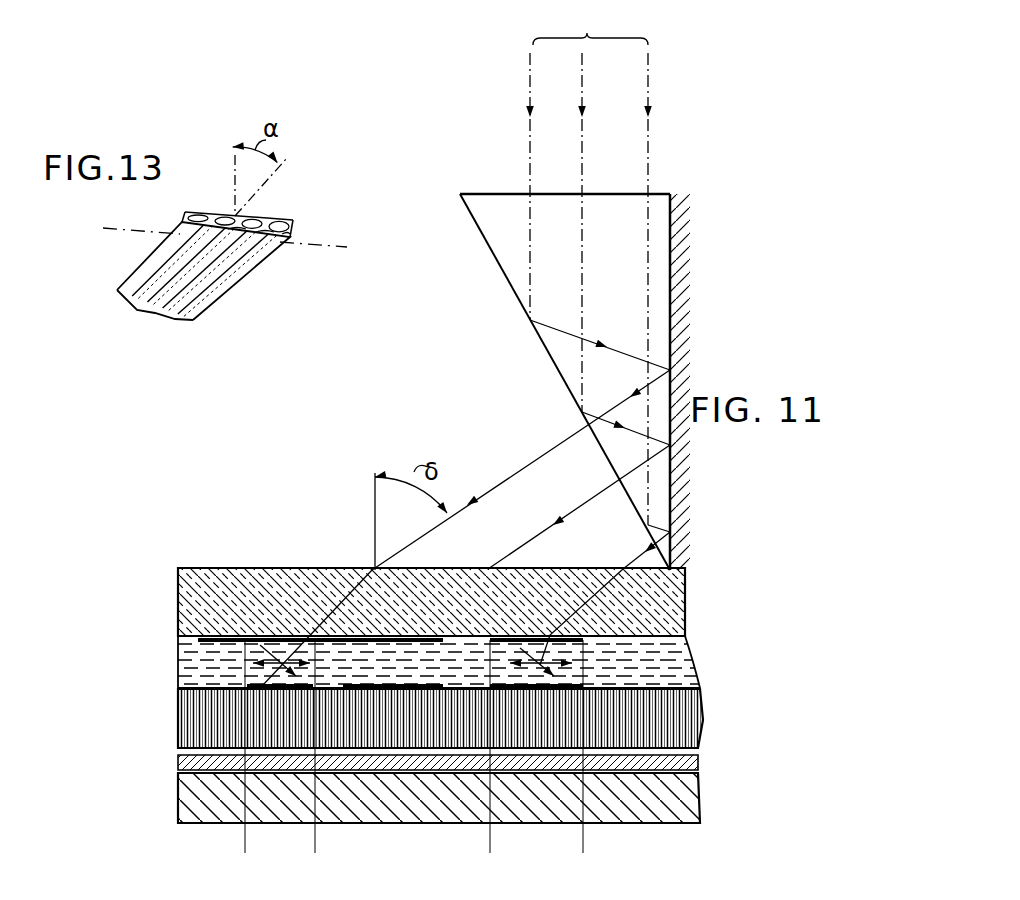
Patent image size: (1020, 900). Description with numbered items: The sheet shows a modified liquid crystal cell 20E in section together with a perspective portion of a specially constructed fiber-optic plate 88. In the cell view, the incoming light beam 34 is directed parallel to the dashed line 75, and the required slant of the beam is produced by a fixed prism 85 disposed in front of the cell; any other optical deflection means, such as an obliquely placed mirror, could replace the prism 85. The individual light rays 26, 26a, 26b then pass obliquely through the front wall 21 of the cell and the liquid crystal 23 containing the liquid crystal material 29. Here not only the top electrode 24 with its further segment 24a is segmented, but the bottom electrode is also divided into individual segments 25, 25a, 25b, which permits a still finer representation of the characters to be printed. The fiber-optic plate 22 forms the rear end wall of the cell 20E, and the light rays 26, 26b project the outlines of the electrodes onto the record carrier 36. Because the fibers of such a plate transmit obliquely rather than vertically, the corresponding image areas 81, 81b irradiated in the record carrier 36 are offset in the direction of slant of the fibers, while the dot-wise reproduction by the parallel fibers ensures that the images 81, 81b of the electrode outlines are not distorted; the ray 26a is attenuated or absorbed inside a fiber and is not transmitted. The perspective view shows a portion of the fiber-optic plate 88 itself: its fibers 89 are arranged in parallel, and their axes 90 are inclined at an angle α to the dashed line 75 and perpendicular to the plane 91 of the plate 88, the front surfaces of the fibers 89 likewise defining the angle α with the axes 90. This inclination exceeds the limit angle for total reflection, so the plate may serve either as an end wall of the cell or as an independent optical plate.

In FIG. 11, the light beam 34 is at (590, 25).
In FIG. 11, the light ray 26 is at (530, 160).
In FIG. 11, the light ray 26a is at (582, 160).
In FIG. 11, the light ray 26b is at (648, 160).
In FIG. 11, the fixed prism 85 is at (660, 270).
In FIG. 13, the dashed line 75 is at (234, 156).
In FIG. 11, the dashed line 75 is at (375, 492).
In FIG. 11, the top electrode 24 is at (263, 636).
In FIG. 11, the upper electrode segment 24a is at (513, 637).
In FIG. 11, the bottom electrode segment 25 is at (246, 686).
In FIG. 11, the bottom electrode segment 25a is at (348, 684).
In FIG. 11, the bottom electrode segment 25b is at (583, 688).
In FIG. 11, the cell 20E is at (700, 560).
In FIG. 11, the front glass plate 21 is at (668, 593).
In FIG. 11, the liquid crystal layer 23 is at (690, 635).
In FIG. 11, the liquid crystal molecules 29 is at (178, 660).
In FIG. 11, the fiber-optic plate 22 is at (692, 717).
In FIG. 11, the record carrier 36 is at (178, 795).
In FIG. 11, the image area 81 is at (315, 853).
In FIG. 11, the image area 81b is at (583, 853).
In FIG. 13, the fiber-optic plate 88 is at (122, 264).
In FIG. 13, the fibers 89 is at (130, 307).
In FIG. 13, the fiber axes 90 is at (277, 176).
In FIG. 13, the plane of the plate 91 is at (305, 243).